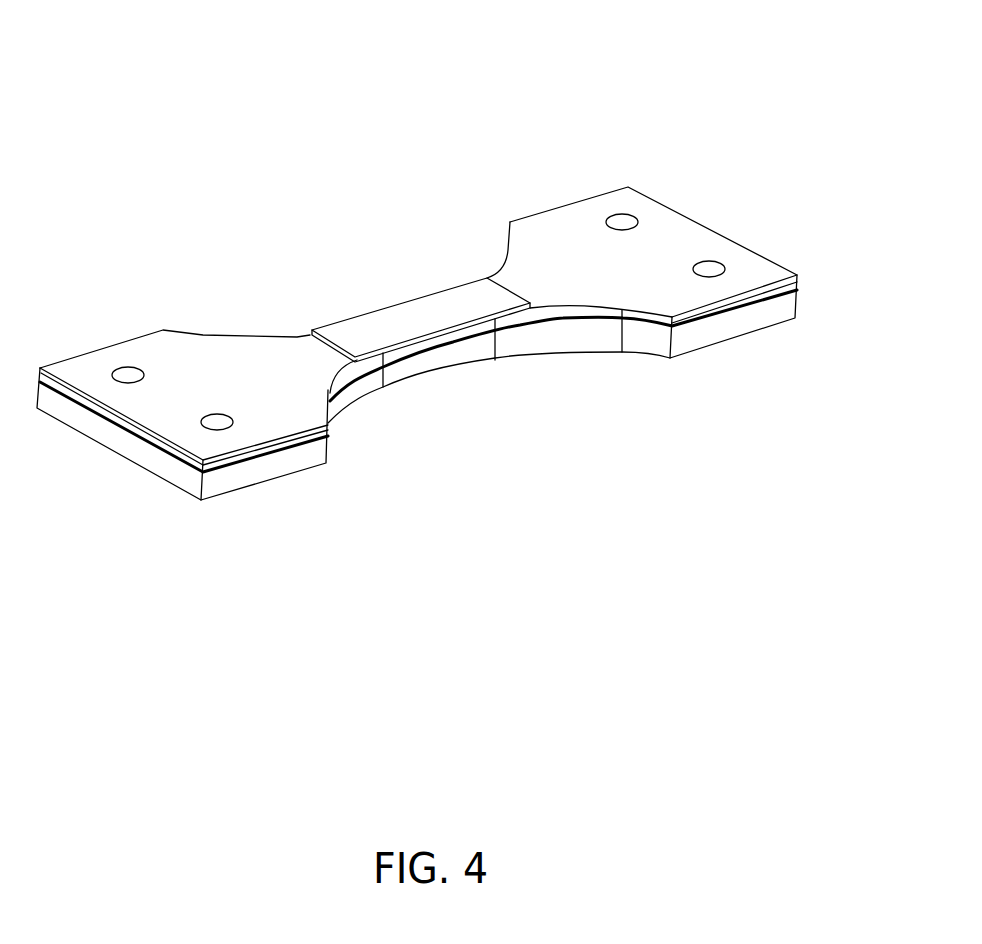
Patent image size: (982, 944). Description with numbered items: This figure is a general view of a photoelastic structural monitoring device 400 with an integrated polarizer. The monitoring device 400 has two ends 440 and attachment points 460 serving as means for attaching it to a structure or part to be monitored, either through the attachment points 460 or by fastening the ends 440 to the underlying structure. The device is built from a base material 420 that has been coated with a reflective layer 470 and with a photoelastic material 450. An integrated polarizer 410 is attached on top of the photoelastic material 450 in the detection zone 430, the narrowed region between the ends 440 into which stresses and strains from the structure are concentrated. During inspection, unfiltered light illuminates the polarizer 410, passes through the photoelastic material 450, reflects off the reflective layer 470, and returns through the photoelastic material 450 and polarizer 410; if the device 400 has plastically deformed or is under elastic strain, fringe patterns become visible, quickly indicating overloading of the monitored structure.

The monitoring device 400 is at (230, 148).
The integrated polarizer 410 is at (393, 303).
The base material 420 is at (590, 352).
The detection zone 430 is at (442, 308).
The ends 440 is at (153, 475).
The photoelastic material 450 is at (240, 358).
The attachment points 460 is at (120, 367).
The reflective layer 470 is at (453, 347).